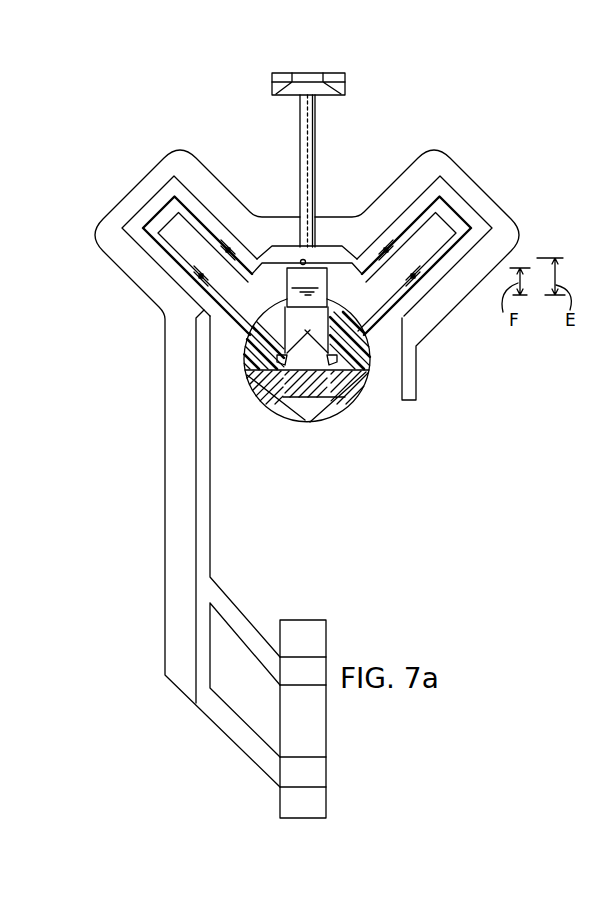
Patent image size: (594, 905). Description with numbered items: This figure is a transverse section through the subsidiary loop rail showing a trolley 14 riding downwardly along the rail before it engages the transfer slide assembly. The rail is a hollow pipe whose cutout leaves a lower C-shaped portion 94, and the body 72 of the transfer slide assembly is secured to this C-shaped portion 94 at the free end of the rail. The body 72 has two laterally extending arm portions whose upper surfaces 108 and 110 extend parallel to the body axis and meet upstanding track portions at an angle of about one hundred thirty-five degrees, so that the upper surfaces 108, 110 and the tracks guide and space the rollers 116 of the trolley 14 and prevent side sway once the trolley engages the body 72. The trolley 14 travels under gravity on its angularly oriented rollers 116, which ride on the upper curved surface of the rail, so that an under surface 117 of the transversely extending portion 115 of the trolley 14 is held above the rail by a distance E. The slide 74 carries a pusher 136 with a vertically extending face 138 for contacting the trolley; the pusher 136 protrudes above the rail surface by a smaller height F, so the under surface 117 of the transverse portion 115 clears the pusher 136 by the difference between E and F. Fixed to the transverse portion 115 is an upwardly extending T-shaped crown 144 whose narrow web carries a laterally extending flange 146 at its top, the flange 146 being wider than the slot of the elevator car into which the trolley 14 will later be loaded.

The trolley 14 is at (153, 437).
The body 72 is at (320, 405).
The slide 74 is at (265, 385).
The lower C-shaped portion 94 is at (344, 398).
The upper surface 108 is at (360, 333).
The upper surface 110 is at (253, 323).
The transversely extending portion 115 is at (320, 232).
The rollers 116 is at (177, 226).
The under surface 117 is at (303, 258).
The pusher 136 is at (333, 278).
The vertically extending face 138 is at (293, 280).
The crown 144 is at (340, 132).
The laterally extending flange 146 is at (324, 73).